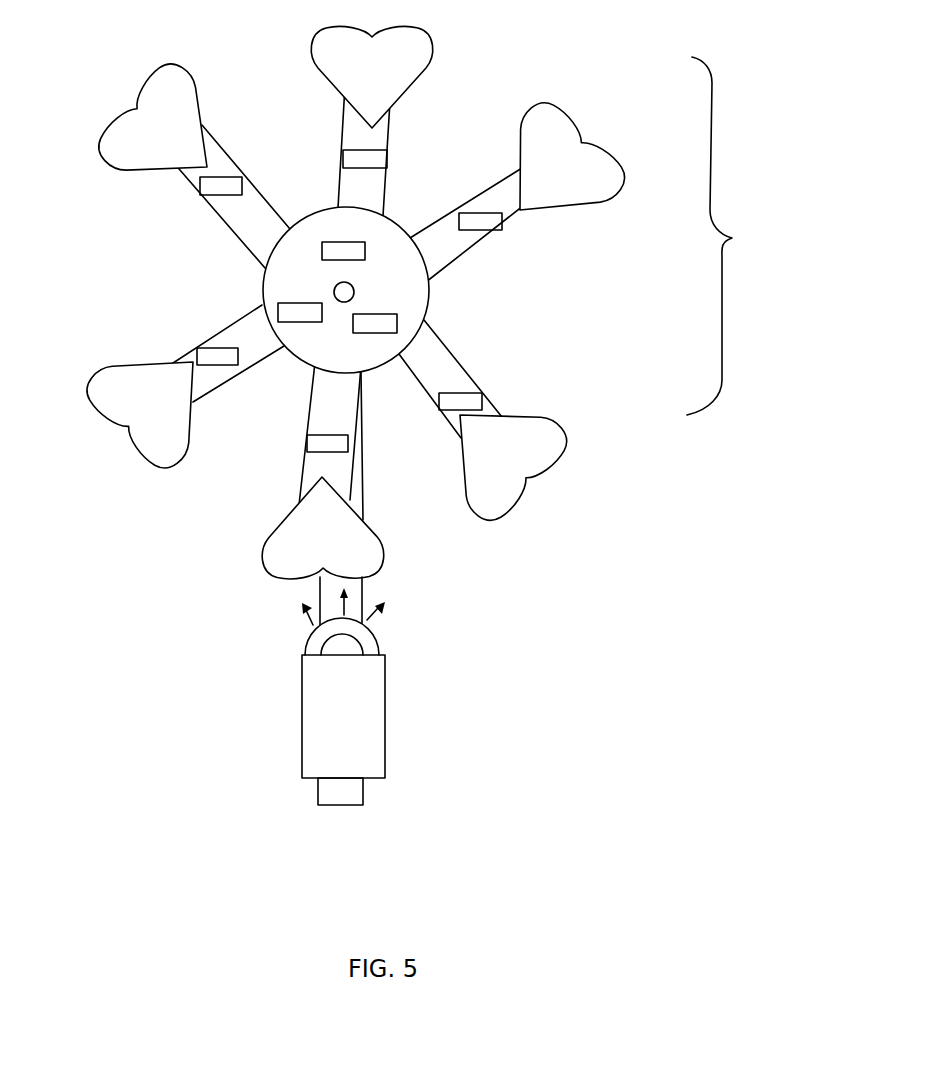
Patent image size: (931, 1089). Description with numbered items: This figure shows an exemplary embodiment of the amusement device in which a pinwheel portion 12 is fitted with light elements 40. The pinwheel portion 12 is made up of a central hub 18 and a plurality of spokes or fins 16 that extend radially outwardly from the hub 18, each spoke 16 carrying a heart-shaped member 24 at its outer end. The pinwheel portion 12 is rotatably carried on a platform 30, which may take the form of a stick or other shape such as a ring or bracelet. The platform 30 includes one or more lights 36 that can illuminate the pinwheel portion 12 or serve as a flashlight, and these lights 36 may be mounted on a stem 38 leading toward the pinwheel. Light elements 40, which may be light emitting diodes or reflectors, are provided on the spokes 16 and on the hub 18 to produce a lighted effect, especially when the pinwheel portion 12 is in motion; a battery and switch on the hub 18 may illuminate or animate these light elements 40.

The pinwheel portion 12 is at (733, 237).
The spokes or fins 16 is at (447, 212).
The central hub 18 is at (432, 302).
The heart-shaped members 24 is at (122, 163).
The platform 30 is at (383, 795).
The lights 36 is at (385, 693).
The stem 38 is at (362, 453).
The light elements 40 is at (223, 177).